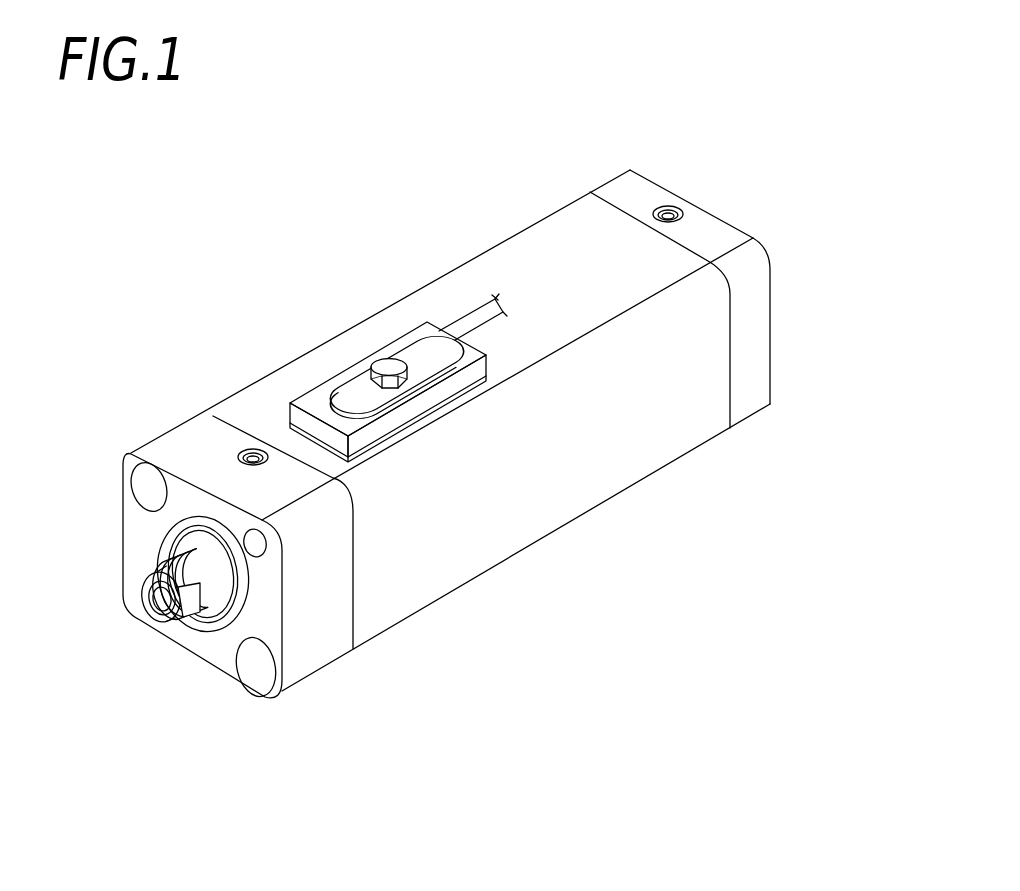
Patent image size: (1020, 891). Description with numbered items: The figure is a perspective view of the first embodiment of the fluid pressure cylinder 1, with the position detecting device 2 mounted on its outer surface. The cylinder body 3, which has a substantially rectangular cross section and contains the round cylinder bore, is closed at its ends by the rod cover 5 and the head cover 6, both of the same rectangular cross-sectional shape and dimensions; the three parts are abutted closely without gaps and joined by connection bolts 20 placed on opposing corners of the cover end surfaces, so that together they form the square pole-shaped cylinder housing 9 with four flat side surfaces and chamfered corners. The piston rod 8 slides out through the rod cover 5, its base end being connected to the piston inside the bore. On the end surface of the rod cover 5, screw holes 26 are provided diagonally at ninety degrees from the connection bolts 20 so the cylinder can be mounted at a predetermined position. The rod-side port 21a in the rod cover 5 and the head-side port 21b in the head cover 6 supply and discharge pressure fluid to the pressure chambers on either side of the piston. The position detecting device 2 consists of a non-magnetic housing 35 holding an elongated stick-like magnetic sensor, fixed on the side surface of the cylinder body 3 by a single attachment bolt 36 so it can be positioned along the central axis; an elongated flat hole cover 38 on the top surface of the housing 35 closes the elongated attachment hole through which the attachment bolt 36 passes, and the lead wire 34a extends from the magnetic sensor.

The fluid pressure cylinder 1 is at (433, 186).
The position detecting device 2 is at (379, 324).
The cylinder body 3 is at (452, 562).
The rod cover 5 is at (309, 642).
The head cover 6 is at (750, 400).
The piston rod 8 is at (180, 614).
The cylinder housing 9 is at (643, 512).
The connection bolts 20 is at (126, 489).
The rod-side port 21a is at (245, 449).
The head-side port 21b is at (670, 209).
The screw holes 26 is at (146, 592).
The lead wire 34a is at (477, 308).
The housing 35 is at (328, 392).
The attachment bolt 36 is at (370, 363).
The hole cover 38 is at (420, 358).